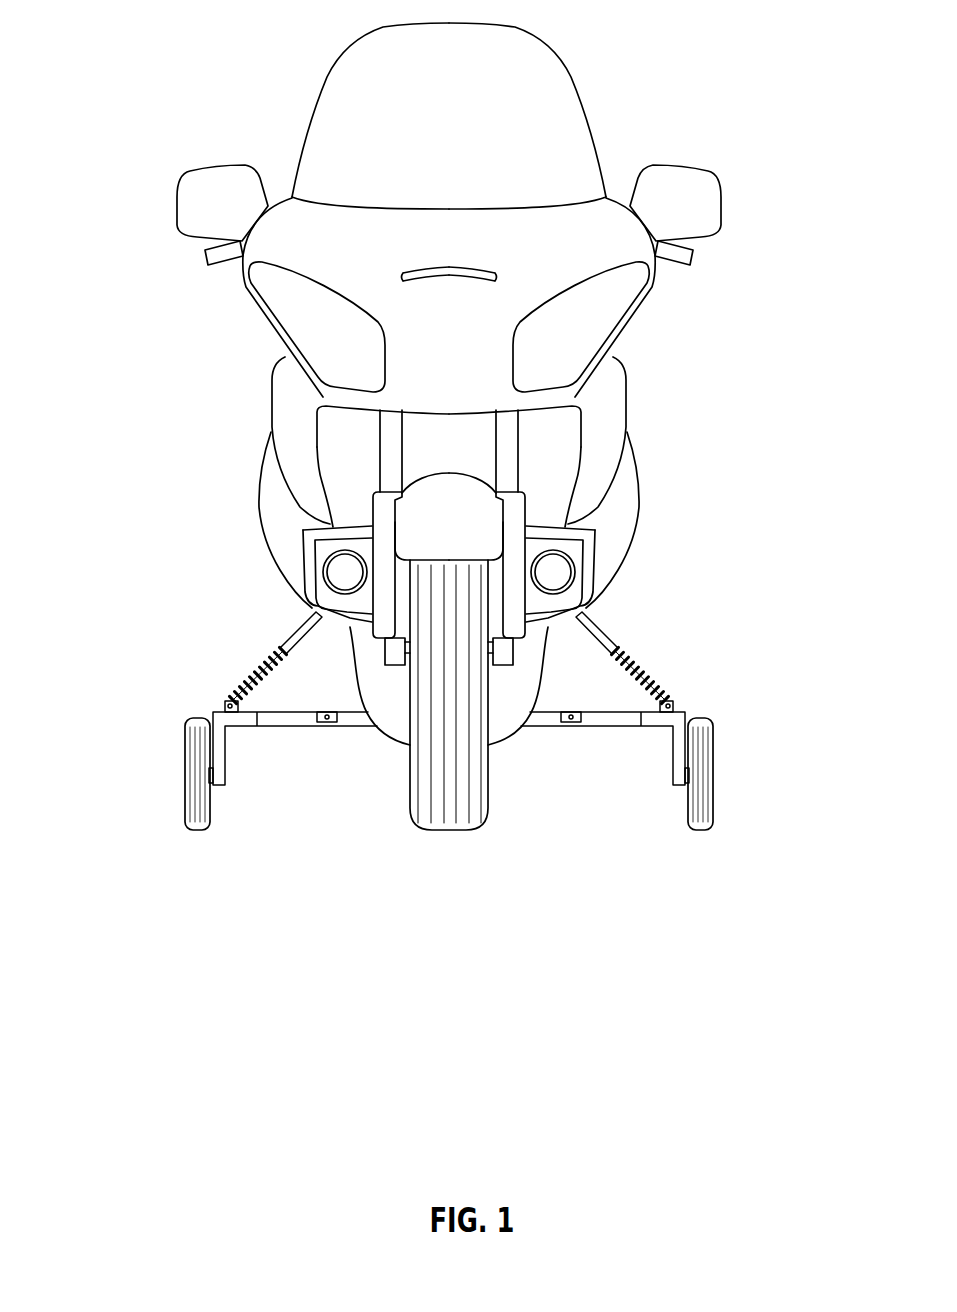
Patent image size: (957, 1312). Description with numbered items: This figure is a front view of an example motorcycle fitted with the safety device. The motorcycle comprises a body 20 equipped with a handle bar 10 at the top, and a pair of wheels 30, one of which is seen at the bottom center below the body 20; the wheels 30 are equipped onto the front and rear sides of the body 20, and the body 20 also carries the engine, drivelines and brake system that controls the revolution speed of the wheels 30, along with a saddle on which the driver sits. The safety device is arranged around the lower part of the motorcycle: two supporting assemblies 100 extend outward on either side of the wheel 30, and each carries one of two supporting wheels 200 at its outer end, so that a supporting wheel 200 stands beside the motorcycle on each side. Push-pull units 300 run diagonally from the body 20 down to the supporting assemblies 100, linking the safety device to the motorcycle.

The handle bar 10 is at (693, 250).
The body 20 is at (660, 419).
The wheel 30 is at (472, 851).
The supporting assembly 100 is at (295, 746).
The supporting wheel 200 is at (165, 797).
The push-pull unit 300 is at (264, 624).